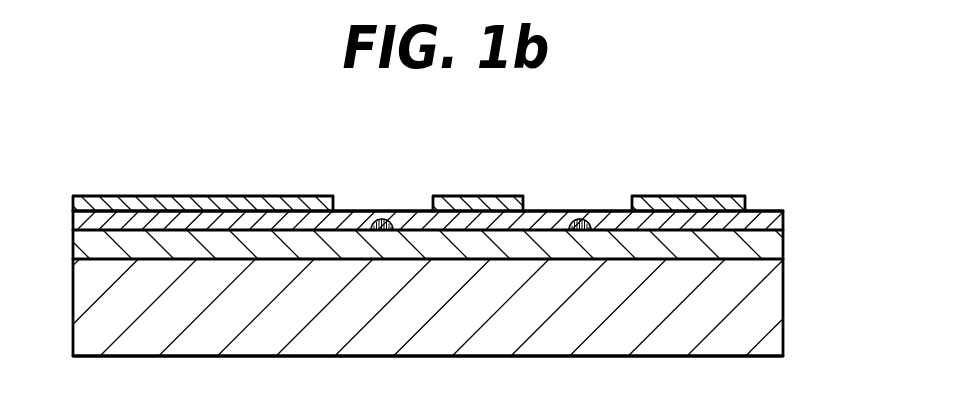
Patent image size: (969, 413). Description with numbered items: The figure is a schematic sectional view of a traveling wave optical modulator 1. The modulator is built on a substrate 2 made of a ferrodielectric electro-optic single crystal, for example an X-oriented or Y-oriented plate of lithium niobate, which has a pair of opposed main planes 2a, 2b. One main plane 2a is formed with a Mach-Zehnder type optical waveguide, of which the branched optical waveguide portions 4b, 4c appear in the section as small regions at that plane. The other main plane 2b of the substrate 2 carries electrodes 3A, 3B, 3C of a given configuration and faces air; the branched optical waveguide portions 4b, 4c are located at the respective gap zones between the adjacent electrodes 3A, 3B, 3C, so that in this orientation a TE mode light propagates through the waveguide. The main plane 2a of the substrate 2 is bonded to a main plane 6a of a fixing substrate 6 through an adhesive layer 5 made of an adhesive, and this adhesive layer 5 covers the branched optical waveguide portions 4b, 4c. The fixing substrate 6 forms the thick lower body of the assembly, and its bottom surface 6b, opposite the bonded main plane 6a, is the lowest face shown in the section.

The traveling wave optical modulator 1 is at (742, 166).
The substrate 2 is at (763, 213).
The main plane 2a is at (727, 230).
The other main plane 2b is at (600, 211).
The electrode 3A is at (693, 196).
The electrode 3B is at (480, 196).
The electrode 3C is at (258, 196).
The branched optical waveguide portion 4b is at (578, 219).
The branched optical waveguide portion 4c is at (380, 219).
The adhesive layer 5 is at (775, 245).
The fixing substrate 6 is at (677, 318).
The main plane of fixing substrate 6a is at (189, 259).
The bottom surface of fixing substrate 6b is at (300, 357).